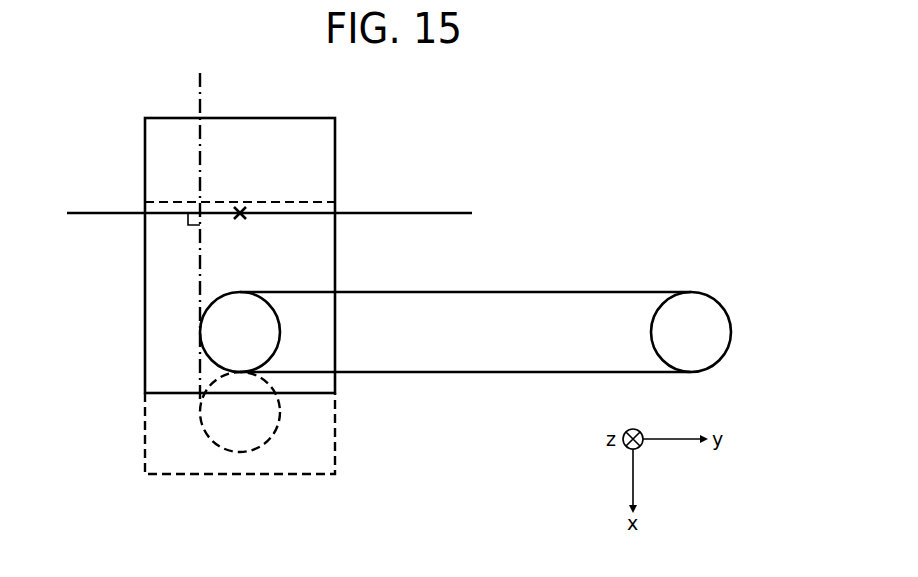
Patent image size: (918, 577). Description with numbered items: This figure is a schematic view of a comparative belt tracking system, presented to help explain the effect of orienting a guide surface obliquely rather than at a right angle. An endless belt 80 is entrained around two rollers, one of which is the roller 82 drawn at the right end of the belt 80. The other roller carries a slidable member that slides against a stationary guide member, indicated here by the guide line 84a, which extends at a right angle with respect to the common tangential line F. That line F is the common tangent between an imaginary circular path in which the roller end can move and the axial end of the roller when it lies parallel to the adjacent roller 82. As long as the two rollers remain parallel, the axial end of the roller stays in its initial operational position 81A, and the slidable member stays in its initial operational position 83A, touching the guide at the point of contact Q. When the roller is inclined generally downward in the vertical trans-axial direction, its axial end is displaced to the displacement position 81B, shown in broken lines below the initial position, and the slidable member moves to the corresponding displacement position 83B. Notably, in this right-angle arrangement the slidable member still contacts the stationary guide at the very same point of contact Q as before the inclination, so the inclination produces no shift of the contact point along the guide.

The endless belt 80 is at (512, 372).
The initial operational position 81A is at (200, 330).
The displacement position 81B is at (240, 452).
The roller 82 is at (651, 333).
The initial operational position 83A is at (145, 265).
The displacement position 83B is at (145, 433).
The reference line 84a is at (92, 213).
The point of contact Q is at (243, 207).
The common tangential line F is at (198, 85).